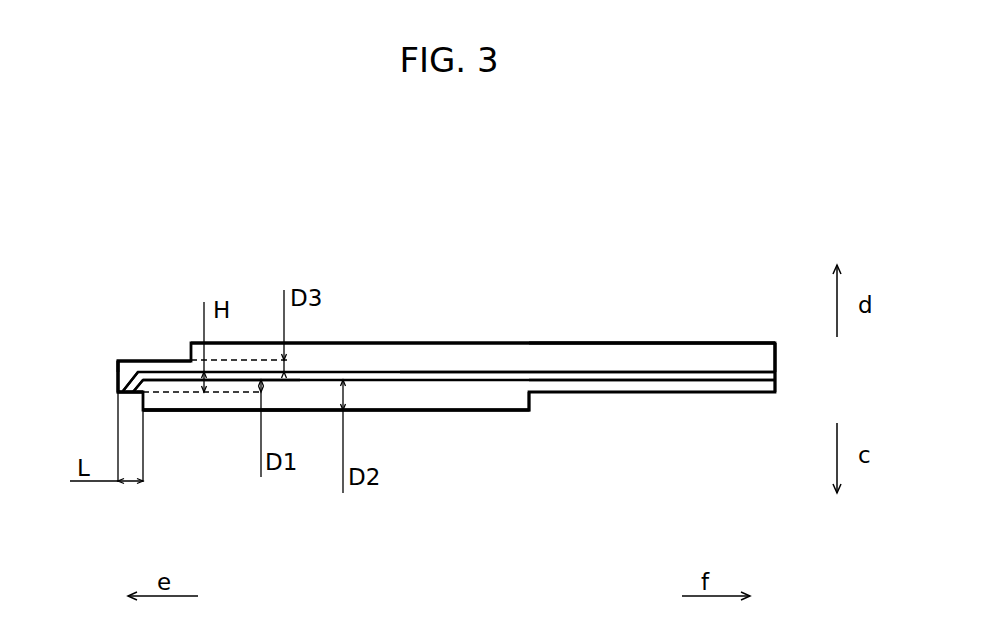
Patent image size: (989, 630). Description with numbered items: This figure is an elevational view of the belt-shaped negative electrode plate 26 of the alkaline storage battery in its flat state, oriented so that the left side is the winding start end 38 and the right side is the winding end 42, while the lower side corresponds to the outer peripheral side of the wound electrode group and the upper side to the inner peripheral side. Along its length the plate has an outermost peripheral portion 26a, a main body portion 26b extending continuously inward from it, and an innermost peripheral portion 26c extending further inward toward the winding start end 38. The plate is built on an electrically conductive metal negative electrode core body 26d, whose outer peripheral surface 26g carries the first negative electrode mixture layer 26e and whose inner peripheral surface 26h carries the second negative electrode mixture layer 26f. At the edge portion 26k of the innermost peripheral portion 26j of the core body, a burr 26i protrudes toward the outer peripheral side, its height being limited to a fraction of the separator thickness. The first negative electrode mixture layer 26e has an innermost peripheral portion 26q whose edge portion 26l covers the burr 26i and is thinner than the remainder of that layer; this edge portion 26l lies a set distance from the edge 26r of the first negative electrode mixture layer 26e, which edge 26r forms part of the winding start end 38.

The negative electrode plate 26 is at (447, 275).
The outermost peripheral portion 26a is at (607, 320).
The main body portion 26b is at (387, 310).
The innermost peripheral portion 26c is at (160, 267).
The negative electrode core body 26d is at (713, 362).
The first negative electrode mixture layer 26e is at (485, 402).
The second negative electrode mixture layer 26f is at (663, 357).
The outer peripheral surface 26g is at (632, 380).
The inner peripheral surface 26h is at (531, 360).
The burr 26i is at (129, 378).
The innermost peripheral portion of the negative electrode core body 26j is at (186, 391).
The edge portion of the innermost peripheral portion of the core body 26k is at (151, 391).
The edge portion of the innermost peripheral portion of the first negative electrode 26l is at (133, 396).
The innermost peripheral portion of the first negative electrode mixture layer 26q is at (178, 421).
The edge of the innermost peripheral portion of the first negative electrode mixture 26r is at (118, 382).
The winding start end 38 is at (118, 367).
The winding end 42 is at (776, 354).